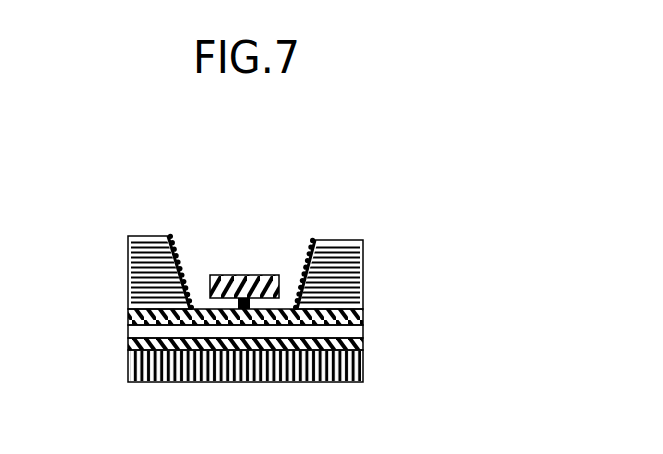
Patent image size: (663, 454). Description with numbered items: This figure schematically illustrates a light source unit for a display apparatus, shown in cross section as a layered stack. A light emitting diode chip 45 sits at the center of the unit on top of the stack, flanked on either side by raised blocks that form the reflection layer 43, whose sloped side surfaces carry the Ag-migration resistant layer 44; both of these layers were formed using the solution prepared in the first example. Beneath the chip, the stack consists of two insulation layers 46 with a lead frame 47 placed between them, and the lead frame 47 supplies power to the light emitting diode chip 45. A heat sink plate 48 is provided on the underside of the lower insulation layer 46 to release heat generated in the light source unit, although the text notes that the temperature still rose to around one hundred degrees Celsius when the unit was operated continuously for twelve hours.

The reflection layer 43 is at (355, 240).
The Ag-migration resistant layer 44 is at (310, 247).
The light emitting diode chip 45 is at (260, 274).
The insulation layers 46 is at (363, 309).
The lead frame 47 is at (363, 335).
The heat sink plate 48 is at (363, 378).